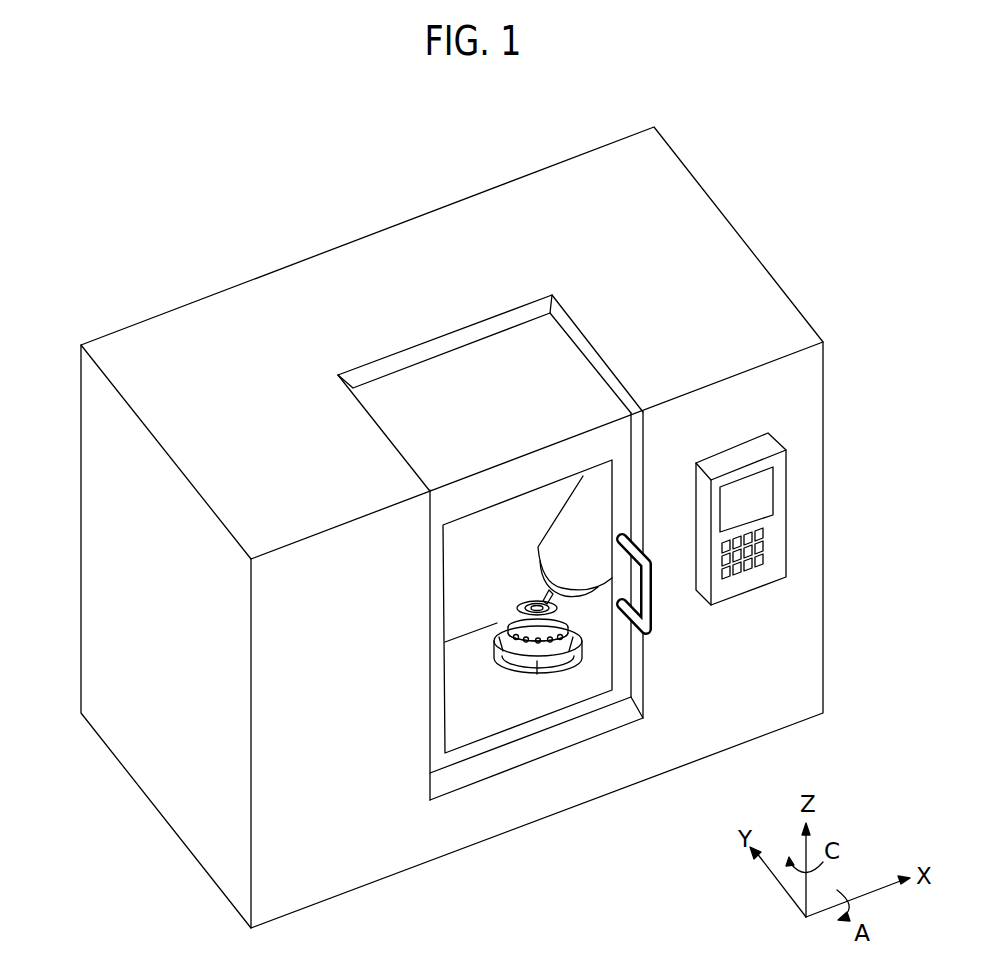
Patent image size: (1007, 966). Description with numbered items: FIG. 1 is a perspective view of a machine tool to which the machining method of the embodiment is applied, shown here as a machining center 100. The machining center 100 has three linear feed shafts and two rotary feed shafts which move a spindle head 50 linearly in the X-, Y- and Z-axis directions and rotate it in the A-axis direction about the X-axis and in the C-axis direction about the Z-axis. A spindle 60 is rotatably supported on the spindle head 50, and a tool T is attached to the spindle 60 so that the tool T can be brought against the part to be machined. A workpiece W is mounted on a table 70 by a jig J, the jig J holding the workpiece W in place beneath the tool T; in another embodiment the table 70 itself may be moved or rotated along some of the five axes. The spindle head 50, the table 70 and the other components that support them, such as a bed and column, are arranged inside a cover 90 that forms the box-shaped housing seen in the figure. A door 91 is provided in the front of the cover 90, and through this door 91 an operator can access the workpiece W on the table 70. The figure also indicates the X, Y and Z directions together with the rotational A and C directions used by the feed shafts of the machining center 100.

The machining center 100 is at (97, 287).
The cover 90 is at (130, 560).
The door 91 is at (434, 722).
The spindle head 50 is at (578, 513).
The spindle 60 is at (540, 573).
The tool T is at (558, 607).
The workpiece W is at (515, 609).
The jig J is at (518, 646).
The table 70 is at (467, 723).